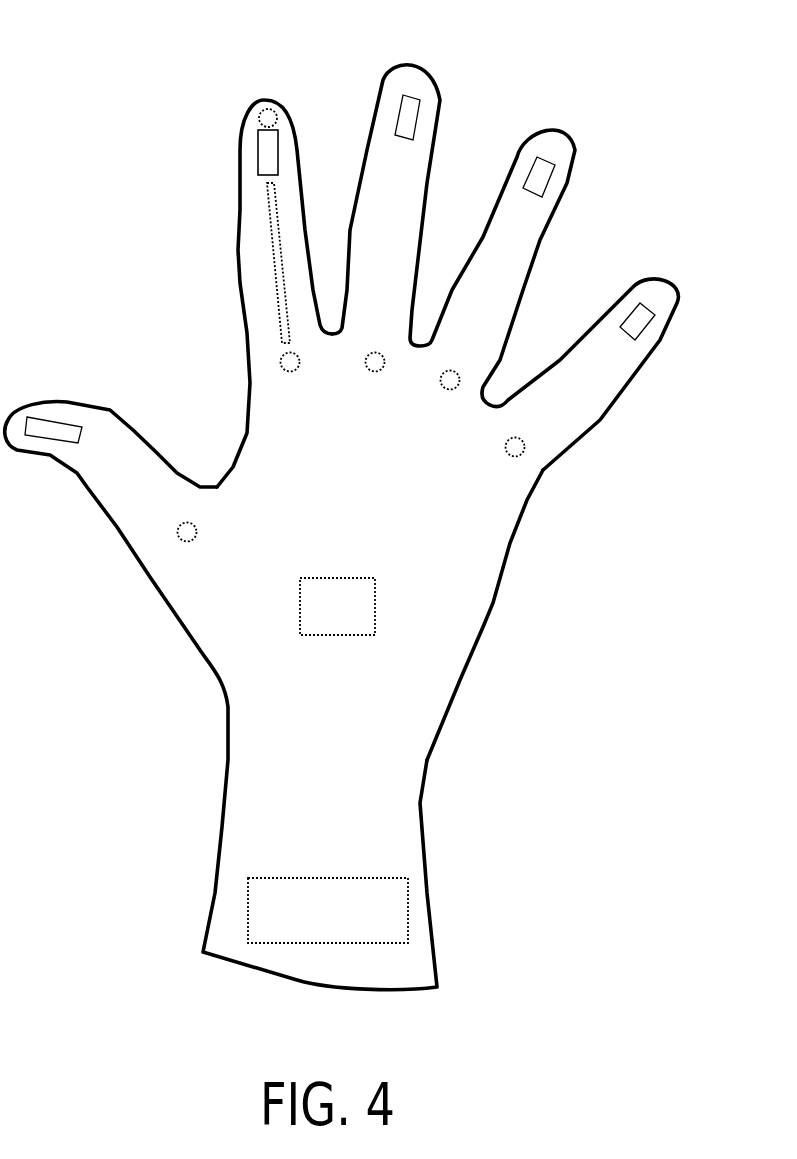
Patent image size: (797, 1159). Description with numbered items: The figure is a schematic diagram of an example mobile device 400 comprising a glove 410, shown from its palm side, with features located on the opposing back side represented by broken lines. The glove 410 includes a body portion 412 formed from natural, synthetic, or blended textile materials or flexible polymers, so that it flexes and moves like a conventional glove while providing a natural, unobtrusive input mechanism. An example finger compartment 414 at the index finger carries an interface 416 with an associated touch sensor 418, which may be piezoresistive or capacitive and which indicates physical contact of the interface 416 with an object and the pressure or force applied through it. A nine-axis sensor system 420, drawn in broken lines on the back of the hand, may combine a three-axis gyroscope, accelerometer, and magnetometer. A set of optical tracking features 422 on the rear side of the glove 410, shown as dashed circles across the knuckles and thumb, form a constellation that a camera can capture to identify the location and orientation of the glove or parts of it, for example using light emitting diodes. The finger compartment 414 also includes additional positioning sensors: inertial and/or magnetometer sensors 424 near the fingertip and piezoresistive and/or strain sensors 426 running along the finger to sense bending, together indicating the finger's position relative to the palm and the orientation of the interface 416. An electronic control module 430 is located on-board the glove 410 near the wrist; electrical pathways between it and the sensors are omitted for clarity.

The mobile device 400 is at (82, 54).
The glove 410 is at (487, 625).
The body portion 412 is at (478, 532).
The finger compartment 414 is at (240, 210).
The interface 416 is at (256, 121).
The touch sensor 418 is at (267, 162).
The 9-axis sensor system 420 is at (313, 602).
The optical tracking features 422 is at (441, 381).
The inertial and/or magnetometer sensors 424 is at (272, 115).
The piezoresistive and/or strain sensors 426 is at (277, 257).
The electronic control module 430 is at (328, 910).